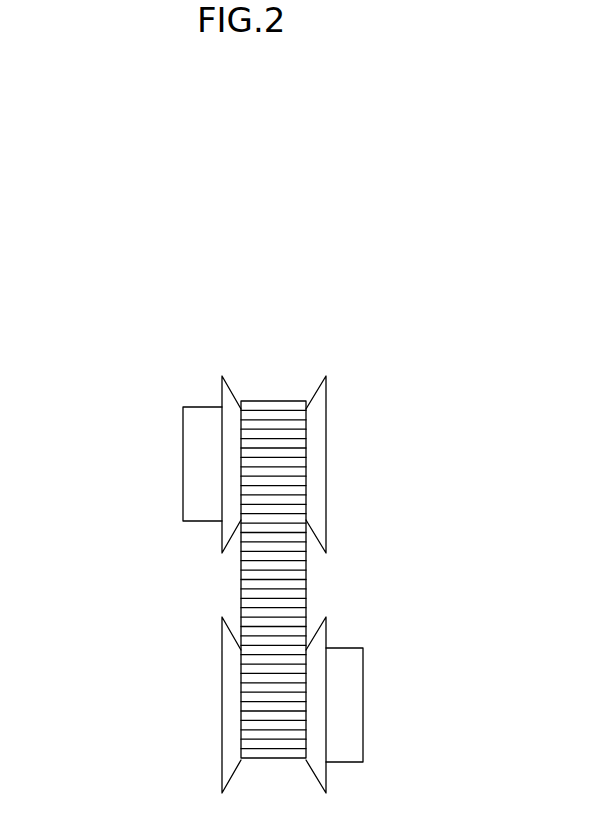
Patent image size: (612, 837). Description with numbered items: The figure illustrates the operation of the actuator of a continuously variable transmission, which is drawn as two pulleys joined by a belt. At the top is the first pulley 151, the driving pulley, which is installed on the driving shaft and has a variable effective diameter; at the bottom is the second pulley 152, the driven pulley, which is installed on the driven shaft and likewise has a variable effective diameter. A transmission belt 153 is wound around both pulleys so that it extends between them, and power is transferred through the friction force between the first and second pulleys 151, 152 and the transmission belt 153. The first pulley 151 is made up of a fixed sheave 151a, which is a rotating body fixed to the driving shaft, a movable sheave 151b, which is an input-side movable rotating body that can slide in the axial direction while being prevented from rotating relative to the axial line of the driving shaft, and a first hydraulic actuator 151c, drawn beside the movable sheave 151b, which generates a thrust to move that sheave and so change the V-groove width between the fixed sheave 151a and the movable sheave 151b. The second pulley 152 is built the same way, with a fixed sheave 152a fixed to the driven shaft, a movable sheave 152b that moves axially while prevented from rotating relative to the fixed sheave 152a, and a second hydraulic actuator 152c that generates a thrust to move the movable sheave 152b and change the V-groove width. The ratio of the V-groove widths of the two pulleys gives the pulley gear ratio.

The first pulley 151 is at (240, 443).
The fixed sheave 151a is at (320, 468).
The movable sheave 151b is at (226, 395).
The first hydraulic actuator 151c is at (195, 468).
The second pulley 152 is at (262, 677).
The fixed sheave 152a is at (228, 699).
The movable sheave 152b is at (322, 637).
The second hydraulic actuator 152c is at (398, 703).
The transmission belt 153 is at (272, 394).